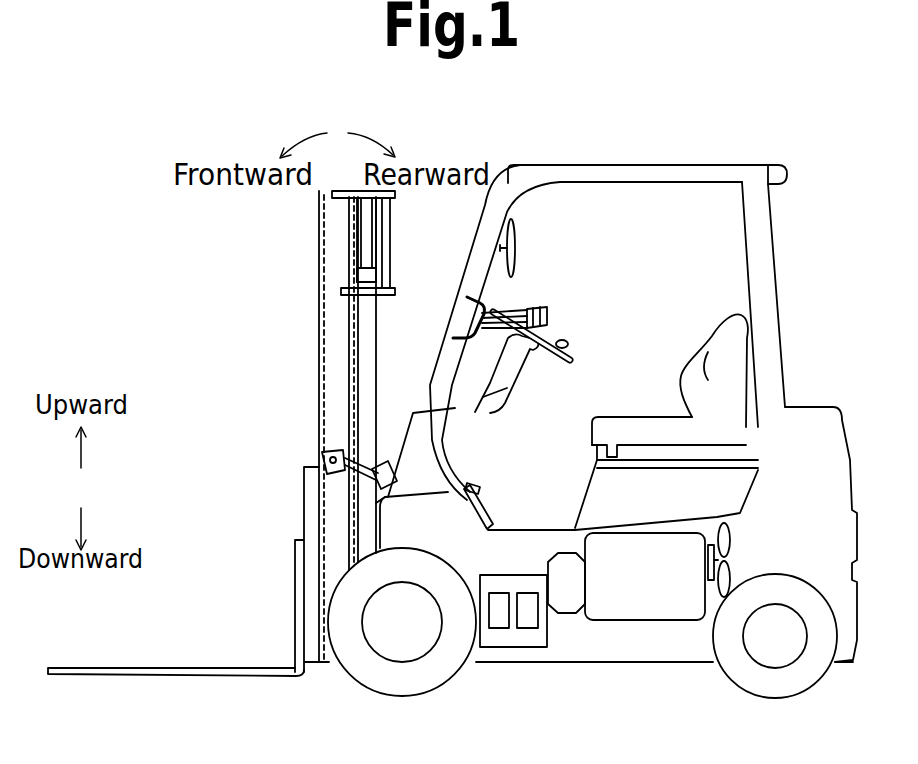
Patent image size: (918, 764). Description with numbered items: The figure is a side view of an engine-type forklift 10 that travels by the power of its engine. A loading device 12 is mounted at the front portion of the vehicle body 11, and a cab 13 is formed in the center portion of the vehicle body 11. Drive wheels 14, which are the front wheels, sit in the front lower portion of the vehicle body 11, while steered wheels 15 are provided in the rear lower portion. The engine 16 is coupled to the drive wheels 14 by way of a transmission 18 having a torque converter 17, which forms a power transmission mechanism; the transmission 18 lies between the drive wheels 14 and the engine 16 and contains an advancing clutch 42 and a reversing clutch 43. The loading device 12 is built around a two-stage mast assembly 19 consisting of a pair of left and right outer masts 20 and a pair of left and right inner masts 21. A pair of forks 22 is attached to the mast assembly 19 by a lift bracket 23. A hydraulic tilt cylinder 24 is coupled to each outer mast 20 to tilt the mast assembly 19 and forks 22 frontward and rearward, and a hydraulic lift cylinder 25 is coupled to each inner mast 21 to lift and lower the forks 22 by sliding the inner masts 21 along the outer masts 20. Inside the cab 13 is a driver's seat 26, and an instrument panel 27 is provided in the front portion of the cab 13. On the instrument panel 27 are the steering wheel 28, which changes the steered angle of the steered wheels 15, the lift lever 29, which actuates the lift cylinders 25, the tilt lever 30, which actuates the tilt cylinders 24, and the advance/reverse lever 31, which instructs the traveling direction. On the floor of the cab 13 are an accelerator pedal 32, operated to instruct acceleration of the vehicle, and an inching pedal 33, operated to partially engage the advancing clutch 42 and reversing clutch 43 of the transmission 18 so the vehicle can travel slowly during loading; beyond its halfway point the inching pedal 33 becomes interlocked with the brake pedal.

The forklift 10 is at (777, 86).
The vehicle body 11 is at (815, 410).
The loading device 12 is at (310, 426).
The cab 13 is at (668, 203).
The drive wheels 14 is at (362, 688).
The steered wheels 15 is at (800, 688).
The engine 16 is at (632, 620).
The torque converter 17 is at (567, 613).
The transmission 18 is at (519, 657).
The mast assembly 19 is at (286, 426).
The outer masts 20 is at (330, 360).
The inner masts 21 is at (320, 308).
The forks 22 is at (178, 668).
The lift bracket 23 is at (297, 578).
The tilt cylinder 24 is at (392, 465).
The lift cylinder 25 is at (372, 330).
The driver's seat 26 is at (727, 330).
The instrument panel 27 is at (507, 423).
The steering wheel 28 is at (573, 360).
The lift lever 29 is at (555, 320).
The tilt lever 30 is at (548, 318).
The advance/reverse lever 31 is at (537, 308).
The accelerator pedal 32 is at (478, 490).
The inching pedal 33 is at (490, 503).
The advancing clutch 42 is at (527, 625).
The reversing clutch 43 is at (498, 625).